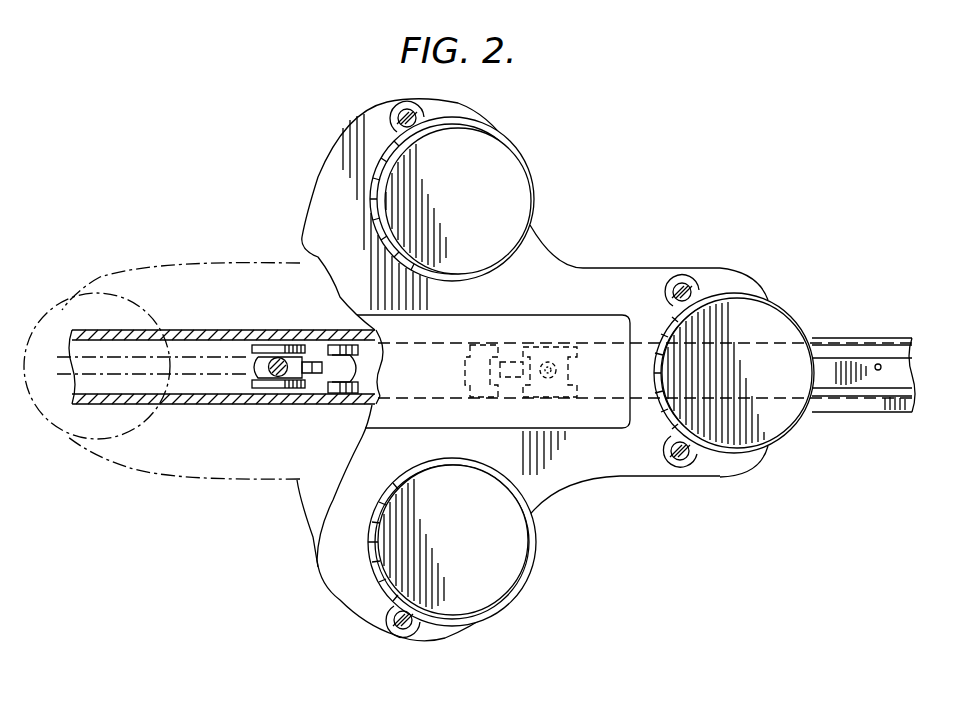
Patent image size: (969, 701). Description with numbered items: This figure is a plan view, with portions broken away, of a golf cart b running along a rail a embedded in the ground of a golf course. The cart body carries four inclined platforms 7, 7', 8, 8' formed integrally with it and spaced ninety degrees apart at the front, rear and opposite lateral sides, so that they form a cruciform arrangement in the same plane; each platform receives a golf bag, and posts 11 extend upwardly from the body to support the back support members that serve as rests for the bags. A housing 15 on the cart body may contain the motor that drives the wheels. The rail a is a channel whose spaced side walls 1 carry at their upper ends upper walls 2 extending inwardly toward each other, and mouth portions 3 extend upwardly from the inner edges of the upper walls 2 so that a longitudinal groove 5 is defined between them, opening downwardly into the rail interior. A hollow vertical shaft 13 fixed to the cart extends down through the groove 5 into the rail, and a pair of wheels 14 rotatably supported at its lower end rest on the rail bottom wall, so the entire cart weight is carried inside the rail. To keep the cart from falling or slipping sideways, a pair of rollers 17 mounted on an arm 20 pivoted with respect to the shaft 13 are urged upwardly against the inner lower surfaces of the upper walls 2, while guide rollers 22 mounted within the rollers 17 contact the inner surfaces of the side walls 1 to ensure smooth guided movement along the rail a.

The side walls 1 is at (181, 358).
The upper walls 2 is at (863, 403).
The mouth portions 3 is at (833, 388).
The longitudinal groove 5 is at (878, 363).
The inclined platform 7 is at (95, 351).
The inclined platform 7' is at (740, 353).
The inclined platform 8 is at (477, 540).
The inclined platform 8' is at (474, 200).
The posts 11 is at (682, 282).
The hollow vertical shaft 13 is at (275, 343).
The wheels 14 is at (256, 345).
The housing 15 is at (495, 314).
The rollers 17 is at (467, 354).
The arm 20 is at (320, 405).
The guide rollers 22 is at (340, 343).
The rail a is at (66, 389).
The golf cart b is at (648, 265).